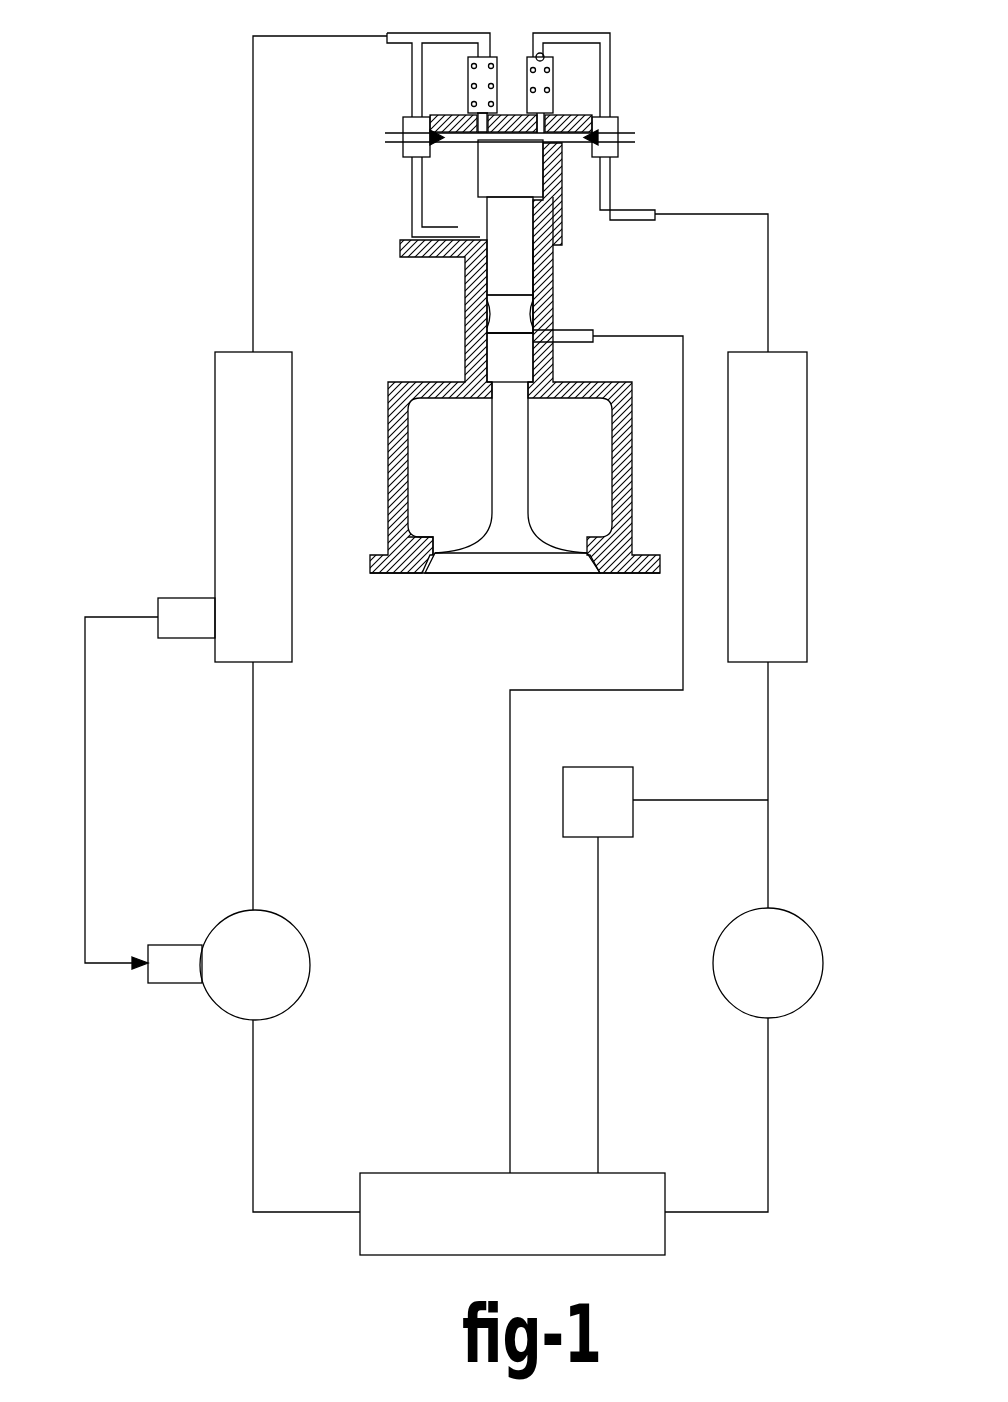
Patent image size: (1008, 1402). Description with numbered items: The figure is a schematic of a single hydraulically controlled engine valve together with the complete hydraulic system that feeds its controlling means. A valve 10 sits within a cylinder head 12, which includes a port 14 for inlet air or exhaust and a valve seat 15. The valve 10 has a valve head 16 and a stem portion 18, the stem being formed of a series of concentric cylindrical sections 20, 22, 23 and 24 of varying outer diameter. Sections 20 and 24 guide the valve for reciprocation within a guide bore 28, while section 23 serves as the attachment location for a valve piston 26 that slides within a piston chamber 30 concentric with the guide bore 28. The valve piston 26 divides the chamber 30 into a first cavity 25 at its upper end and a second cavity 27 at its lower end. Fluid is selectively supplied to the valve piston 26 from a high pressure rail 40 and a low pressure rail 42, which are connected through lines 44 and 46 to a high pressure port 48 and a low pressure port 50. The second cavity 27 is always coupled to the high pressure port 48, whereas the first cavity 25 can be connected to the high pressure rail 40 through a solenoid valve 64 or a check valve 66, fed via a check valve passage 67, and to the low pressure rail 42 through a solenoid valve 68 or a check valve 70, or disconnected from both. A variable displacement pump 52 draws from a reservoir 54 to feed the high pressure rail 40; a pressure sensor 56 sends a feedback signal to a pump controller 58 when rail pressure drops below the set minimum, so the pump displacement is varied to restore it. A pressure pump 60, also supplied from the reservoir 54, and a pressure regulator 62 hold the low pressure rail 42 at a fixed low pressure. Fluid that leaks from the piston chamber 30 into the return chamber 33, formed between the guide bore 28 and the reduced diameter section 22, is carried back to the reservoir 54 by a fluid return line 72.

The valve 10 is at (512, 504).
The cylinder head 12 is at (618, 580).
The port 14 is at (440, 545).
The valve seat 15 is at (428, 560).
The valve head 16 is at (503, 574).
The stem portion 18 is at (500, 418).
The cylindrical section 20 is at (545, 365).
The reduced diameter section 22 is at (470, 332).
The cylindrical section 23 is at (565, 207).
The cylindrical section 24 is at (467, 284).
The first cavity 25 is at (433, 152).
The valve piston 26 is at (528, 182).
The second cavity 27 is at (445, 258).
The guide bore 28 is at (545, 276).
The piston chamber 30 is at (555, 218).
The return chamber 33 is at (545, 316).
The high pressure rail 40 is at (215, 374).
The low pressure rail 42 is at (807, 435).
The line 44 is at (253, 40).
The line 46 is at (720, 214).
The high pressure port 48 is at (417, 118).
The low pressure port 50 is at (605, 160).
The variable displacement pump 52 is at (310, 962).
The reservoir 54 is at (423, 1173).
The pressure sensor 56 is at (185, 598).
The pump controller 58 is at (176, 945).
The pressure pump 60 is at (812, 932).
The pressure regulator 62 is at (613, 815).
The solenoid valve 64 is at (385, 137).
The check valve 66 is at (490, 70).
The check valve passage 67 is at (472, 118).
The solenoid valve 68 is at (636, 137).
The check valve 70 is at (525, 78).
The fluid return line 72 is at (652, 336).